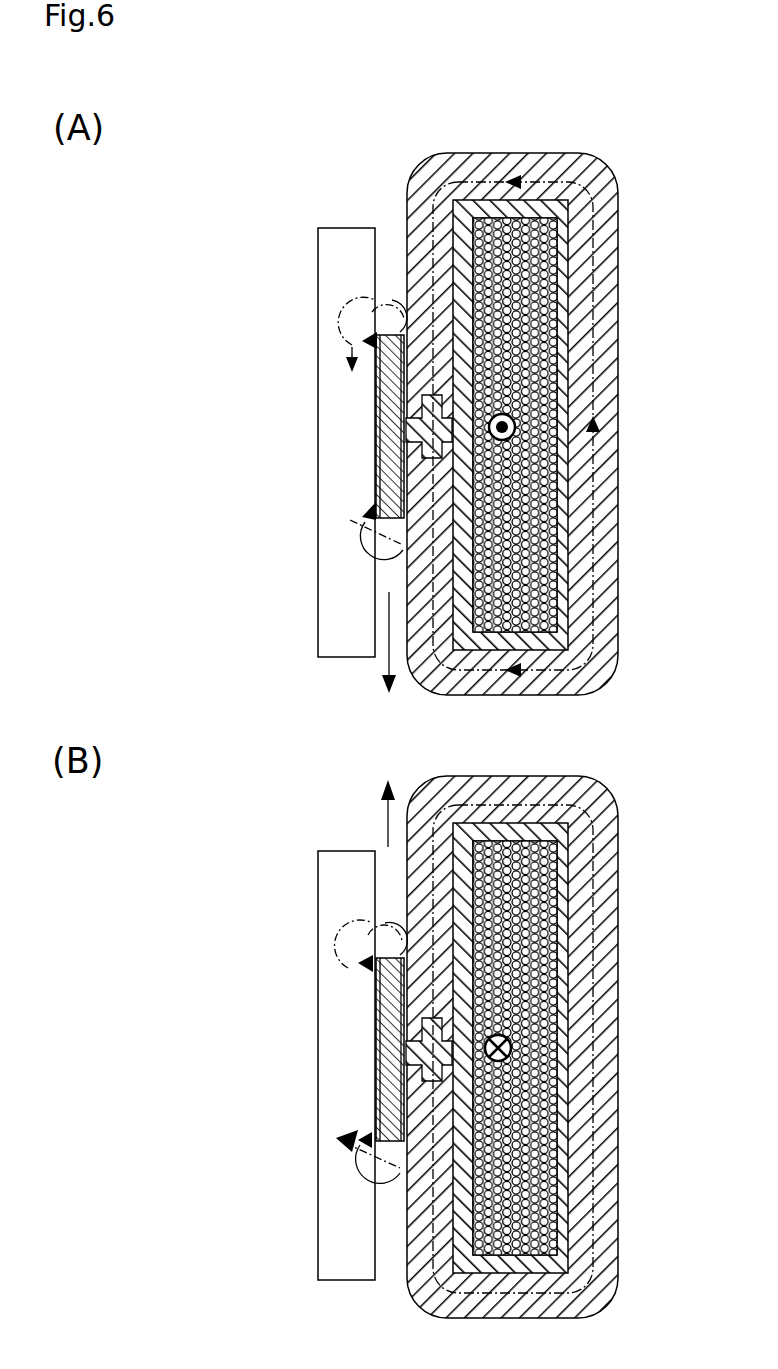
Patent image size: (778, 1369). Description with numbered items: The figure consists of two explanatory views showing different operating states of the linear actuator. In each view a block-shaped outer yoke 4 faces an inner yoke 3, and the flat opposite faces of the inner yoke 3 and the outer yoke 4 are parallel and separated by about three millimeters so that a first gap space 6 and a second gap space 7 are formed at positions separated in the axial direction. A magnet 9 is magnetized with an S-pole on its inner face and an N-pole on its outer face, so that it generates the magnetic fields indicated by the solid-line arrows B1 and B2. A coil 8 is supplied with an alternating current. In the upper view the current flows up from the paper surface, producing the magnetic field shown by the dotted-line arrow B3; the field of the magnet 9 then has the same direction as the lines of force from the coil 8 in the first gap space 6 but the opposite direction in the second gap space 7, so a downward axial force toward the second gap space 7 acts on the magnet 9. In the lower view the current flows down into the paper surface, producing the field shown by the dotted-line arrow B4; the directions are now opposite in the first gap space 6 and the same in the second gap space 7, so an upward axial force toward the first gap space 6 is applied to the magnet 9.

The inner yoke 3 is at (295, 280).
The outer yoke 4 is at (598, 150).
The first gap space 6 is at (394, 268).
The second gap space 7 is at (383, 575).
The coil 8 is at (540, 313).
The magnet 9 is at (385, 428).
The magnetic field arrow B1 is at (393, 306).
The magnetic field arrow B2 is at (395, 536).
The magnetic field arrow B3 is at (400, 592).
The magnetic field arrow B4 is at (420, 1207).